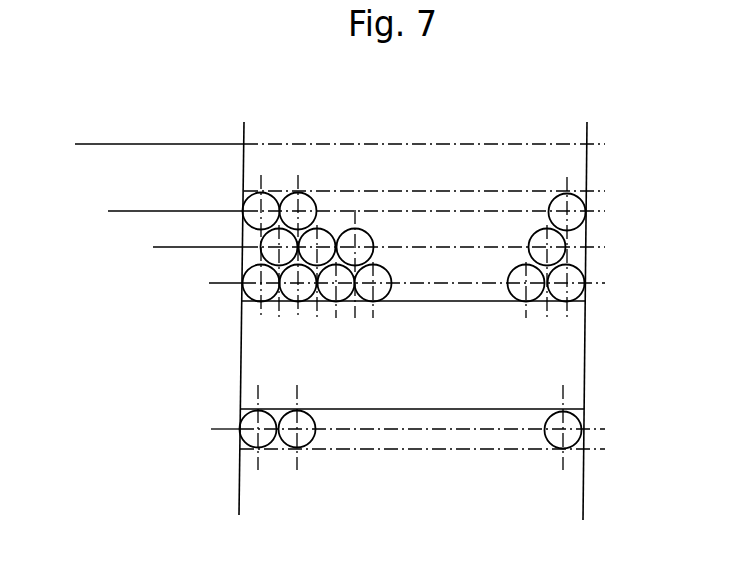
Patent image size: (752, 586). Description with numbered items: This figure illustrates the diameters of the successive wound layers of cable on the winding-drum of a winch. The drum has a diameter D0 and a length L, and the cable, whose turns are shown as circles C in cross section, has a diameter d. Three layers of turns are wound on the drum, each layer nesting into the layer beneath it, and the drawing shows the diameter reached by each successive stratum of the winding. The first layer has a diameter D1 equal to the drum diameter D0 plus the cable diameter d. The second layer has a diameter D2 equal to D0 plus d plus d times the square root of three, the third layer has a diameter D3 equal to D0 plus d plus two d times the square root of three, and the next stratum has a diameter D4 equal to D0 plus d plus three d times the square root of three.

The ball C is at (259, 205).
The cable diameter d is at (288, 446).
The winding-drum diameter D0 is at (277, 302).
The first layer diameter D1 is at (222, 284).
The second layer diameter D2 is at (170, 248).
The third layer diameter D3 is at (129, 212).
The fourth layer diameter D4 is at (85, 145).
The winding-drum length L is at (583, 504).